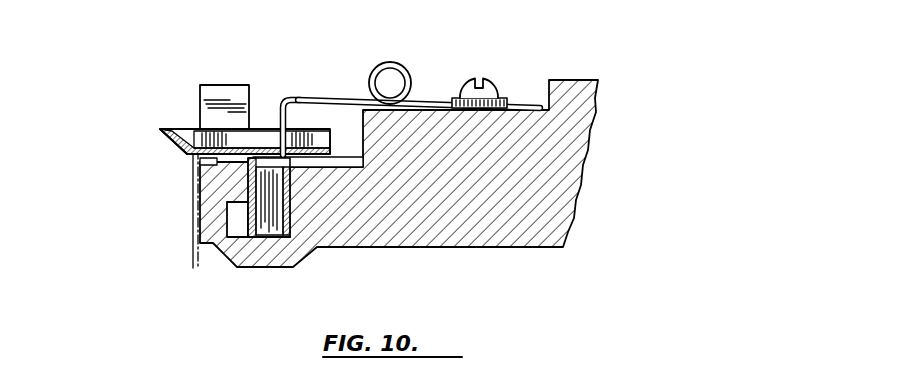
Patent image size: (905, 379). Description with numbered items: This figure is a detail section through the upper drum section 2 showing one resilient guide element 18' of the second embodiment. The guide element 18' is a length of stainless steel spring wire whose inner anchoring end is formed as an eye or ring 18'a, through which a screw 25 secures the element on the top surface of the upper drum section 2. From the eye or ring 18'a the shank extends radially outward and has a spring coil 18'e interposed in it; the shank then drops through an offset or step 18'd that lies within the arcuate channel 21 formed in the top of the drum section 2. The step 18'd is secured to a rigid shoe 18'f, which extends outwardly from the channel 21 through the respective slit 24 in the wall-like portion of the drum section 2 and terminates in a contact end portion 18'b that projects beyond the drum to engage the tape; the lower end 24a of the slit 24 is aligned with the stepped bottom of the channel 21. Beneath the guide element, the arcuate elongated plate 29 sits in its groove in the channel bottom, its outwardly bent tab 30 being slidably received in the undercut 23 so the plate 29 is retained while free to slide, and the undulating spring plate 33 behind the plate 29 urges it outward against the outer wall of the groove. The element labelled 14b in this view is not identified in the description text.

The upper drum section 2 is at (388, 247).
The wall 14b is at (172, 155).
The resilient guide element 18' is at (419, 71).
The eye or ring 18'a is at (453, 68).
The contact end portion 18'b is at (187, 140).
The offset or step 18'd is at (286, 107).
The spring coil 18'e is at (413, 63).
The rigid shoe 18'f is at (225, 125).
The arcuate channel 21 is at (342, 161).
The undercut 23 is at (226, 218).
The slit 24 is at (200, 92).
The lower end of slit 24a is at (202, 168).
The screw 25 is at (500, 97).
The elongated plate 29 is at (256, 250).
The outwardly bent tab 30 is at (199, 238).
The undulating spring plate 33 is at (270, 240).